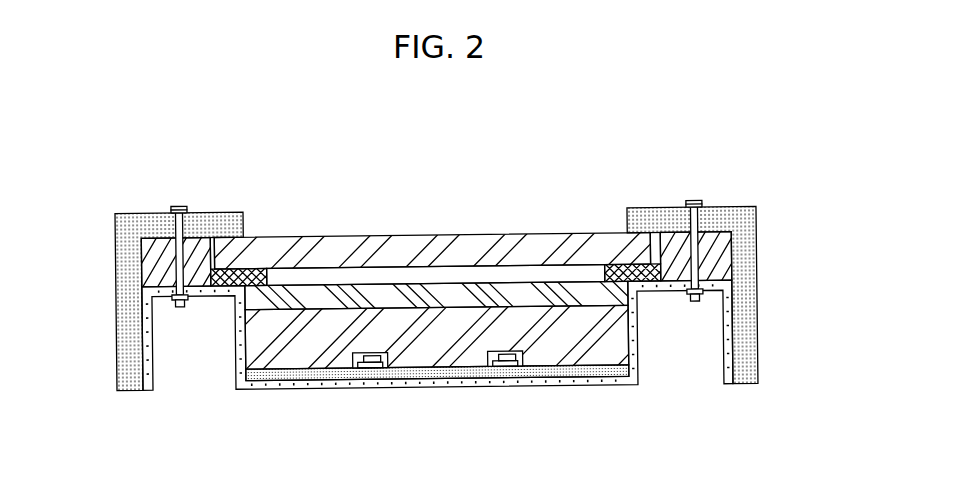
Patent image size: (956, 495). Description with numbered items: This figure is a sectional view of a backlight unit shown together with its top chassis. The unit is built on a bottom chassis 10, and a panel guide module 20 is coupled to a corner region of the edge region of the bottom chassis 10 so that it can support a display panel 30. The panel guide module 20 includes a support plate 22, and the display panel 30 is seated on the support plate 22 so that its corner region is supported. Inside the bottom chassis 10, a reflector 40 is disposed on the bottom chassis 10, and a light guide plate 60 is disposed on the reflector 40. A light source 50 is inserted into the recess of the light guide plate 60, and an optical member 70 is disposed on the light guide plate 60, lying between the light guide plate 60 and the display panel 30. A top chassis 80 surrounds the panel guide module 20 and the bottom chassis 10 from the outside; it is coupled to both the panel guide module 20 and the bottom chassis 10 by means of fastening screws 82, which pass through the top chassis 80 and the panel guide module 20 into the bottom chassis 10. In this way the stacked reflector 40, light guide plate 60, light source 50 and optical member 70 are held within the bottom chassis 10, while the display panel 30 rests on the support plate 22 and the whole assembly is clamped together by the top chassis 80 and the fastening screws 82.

The bottom chassis 10 is at (145, 338).
The panel guide module 20 is at (142, 254).
The support plate 22 is at (252, 266).
The display panel 30 is at (408, 240).
The reflector 40 is at (450, 372).
The light source 50 is at (366, 367).
The light guide plate 60 is at (302, 358).
The optical member 70 is at (347, 283).
The top chassis 80 is at (222, 210).
The fastening screw 82 is at (180, 204).